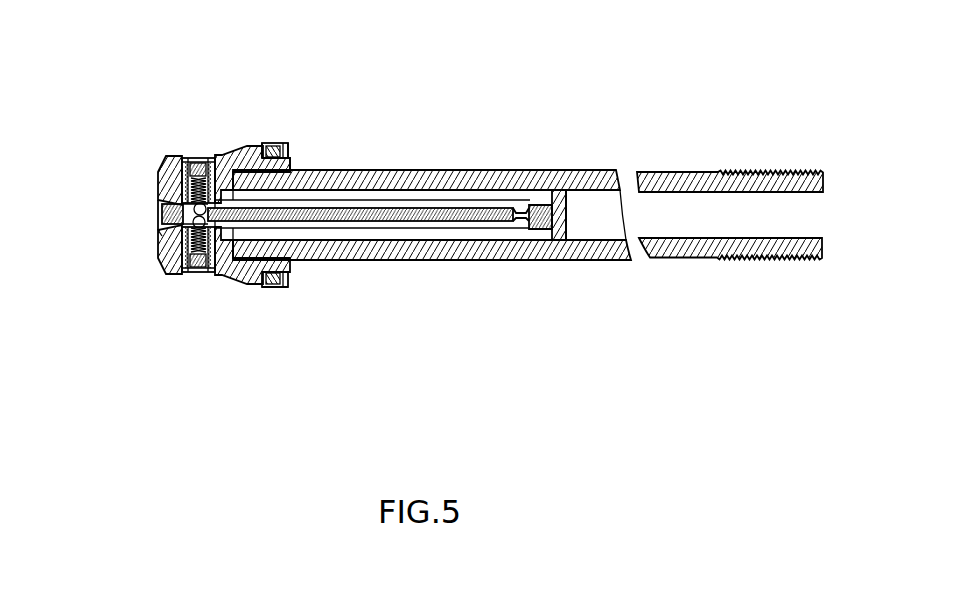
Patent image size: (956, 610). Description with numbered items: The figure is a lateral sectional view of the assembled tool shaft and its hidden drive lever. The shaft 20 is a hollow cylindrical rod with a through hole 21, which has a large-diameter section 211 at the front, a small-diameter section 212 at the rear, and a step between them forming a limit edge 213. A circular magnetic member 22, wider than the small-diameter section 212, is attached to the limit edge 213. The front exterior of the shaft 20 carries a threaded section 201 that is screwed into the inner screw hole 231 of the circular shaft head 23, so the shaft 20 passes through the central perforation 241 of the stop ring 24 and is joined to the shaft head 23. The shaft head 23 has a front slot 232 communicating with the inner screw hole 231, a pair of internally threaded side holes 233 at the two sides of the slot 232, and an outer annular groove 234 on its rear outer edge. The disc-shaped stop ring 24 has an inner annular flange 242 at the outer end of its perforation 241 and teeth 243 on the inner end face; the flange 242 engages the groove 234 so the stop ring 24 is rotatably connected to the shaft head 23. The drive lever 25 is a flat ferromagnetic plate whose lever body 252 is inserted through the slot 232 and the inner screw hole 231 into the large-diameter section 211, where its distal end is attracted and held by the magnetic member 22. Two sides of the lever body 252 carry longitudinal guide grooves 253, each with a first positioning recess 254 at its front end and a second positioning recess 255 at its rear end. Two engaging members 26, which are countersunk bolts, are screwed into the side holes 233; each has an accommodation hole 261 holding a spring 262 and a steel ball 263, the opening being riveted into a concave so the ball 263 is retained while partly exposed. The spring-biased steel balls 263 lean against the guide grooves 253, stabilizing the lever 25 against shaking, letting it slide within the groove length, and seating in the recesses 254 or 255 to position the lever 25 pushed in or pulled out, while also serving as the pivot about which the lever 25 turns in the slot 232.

The shaft 20 is at (493, 172).
The threaded section 201 is at (261, 101).
The through hole 21 is at (671, 207).
The large-diameter section 211 is at (465, 260).
The small-diameter section 212 is at (748, 216).
The limit edge 213 is at (568, 242).
The magnetic member 22 is at (556, 190).
The circular shaft head 23 is at (250, 284).
The inner screw hole 231 is at (262, 146).
The slot 232 is at (158, 226).
The side holes 233 is at (158, 157).
The outer annular groove 234 is at (289, 326).
The stop ring 24 is at (280, 146).
The central perforation 241 is at (292, 163).
The inner annular flange 242 is at (275, 287).
The teeth 243 is at (288, 147).
The drive lever 25 is at (157, 212).
The lever body 252 is at (535, 232).
The guide grooves 253 is at (438, 200).
The first positioning recess 254 is at (182, 157).
The second positioning recess 255 is at (521, 210).
The engaging members 26 is at (206, 158).
The accommodation hole 261 is at (196, 158).
The spring 262 is at (207, 272).
The steel ball 263 is at (158, 239).